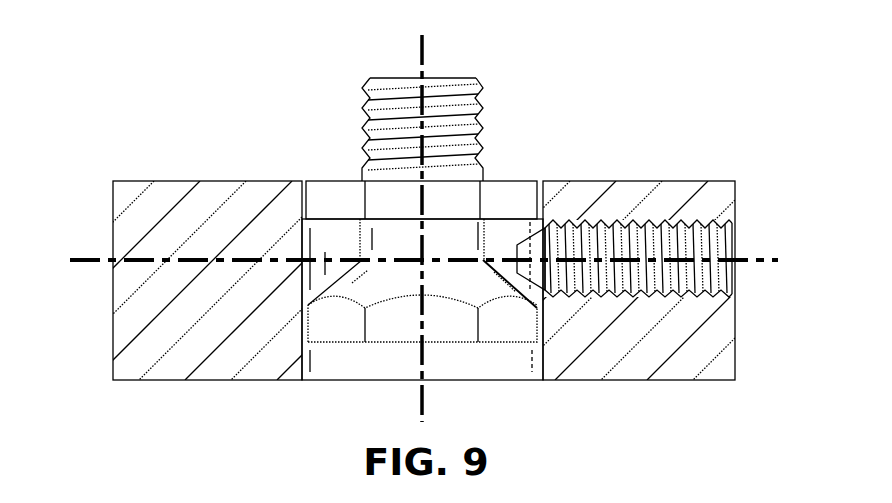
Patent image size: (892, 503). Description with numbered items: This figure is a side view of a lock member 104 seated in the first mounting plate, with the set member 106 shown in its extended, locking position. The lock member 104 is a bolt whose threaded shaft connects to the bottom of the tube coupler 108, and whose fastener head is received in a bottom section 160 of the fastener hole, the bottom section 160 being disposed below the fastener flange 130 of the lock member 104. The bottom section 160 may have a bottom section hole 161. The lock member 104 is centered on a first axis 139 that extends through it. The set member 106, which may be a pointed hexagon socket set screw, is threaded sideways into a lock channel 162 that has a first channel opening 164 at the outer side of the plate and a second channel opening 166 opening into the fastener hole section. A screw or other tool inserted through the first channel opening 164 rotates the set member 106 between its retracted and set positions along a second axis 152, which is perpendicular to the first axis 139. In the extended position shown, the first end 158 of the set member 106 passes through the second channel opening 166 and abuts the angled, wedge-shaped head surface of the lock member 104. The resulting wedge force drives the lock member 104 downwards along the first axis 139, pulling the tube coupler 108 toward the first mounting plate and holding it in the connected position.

The lock member 104 is at (355, 107).
The set member 106 is at (648, 222).
The tube coupler 108 is at (171, 179).
The fastener flange 130 is at (328, 190).
The first axis 139 is at (420, 55).
The second axis 152 is at (83, 258).
The first end 158 is at (527, 248).
The bottom section 160 is at (474, 363).
The bottom section hole 161 is at (318, 240).
The lock channel 162 is at (693, 215).
The first channel opening 164 is at (740, 274).
The second channel opening 166 is at (553, 236).